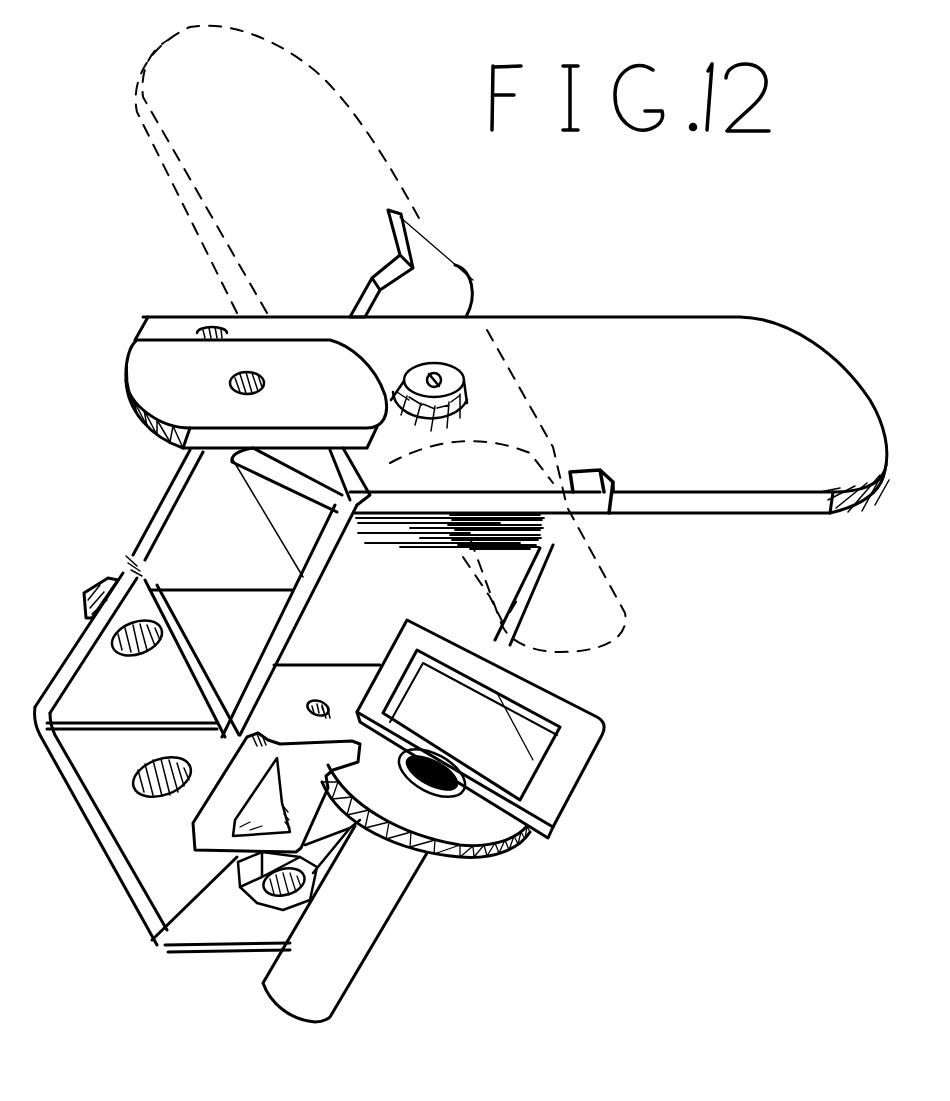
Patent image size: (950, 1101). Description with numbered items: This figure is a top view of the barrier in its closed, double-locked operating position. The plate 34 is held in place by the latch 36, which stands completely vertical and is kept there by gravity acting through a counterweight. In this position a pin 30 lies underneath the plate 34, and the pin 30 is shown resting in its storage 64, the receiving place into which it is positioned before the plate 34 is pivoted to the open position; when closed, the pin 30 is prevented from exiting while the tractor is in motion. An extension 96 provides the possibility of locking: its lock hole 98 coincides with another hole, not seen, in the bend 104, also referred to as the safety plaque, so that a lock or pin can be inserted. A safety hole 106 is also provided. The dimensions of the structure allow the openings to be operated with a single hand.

The pin 30 is at (567, 783).
The plate 34 is at (722, 337).
The latch 36 is at (450, 275).
The storage 64 is at (463, 795).
The extension 96 is at (219, 352).
The lock hole 98 is at (247, 372).
The bend 104 is at (178, 328).
The safety hole 106 is at (197, 817).